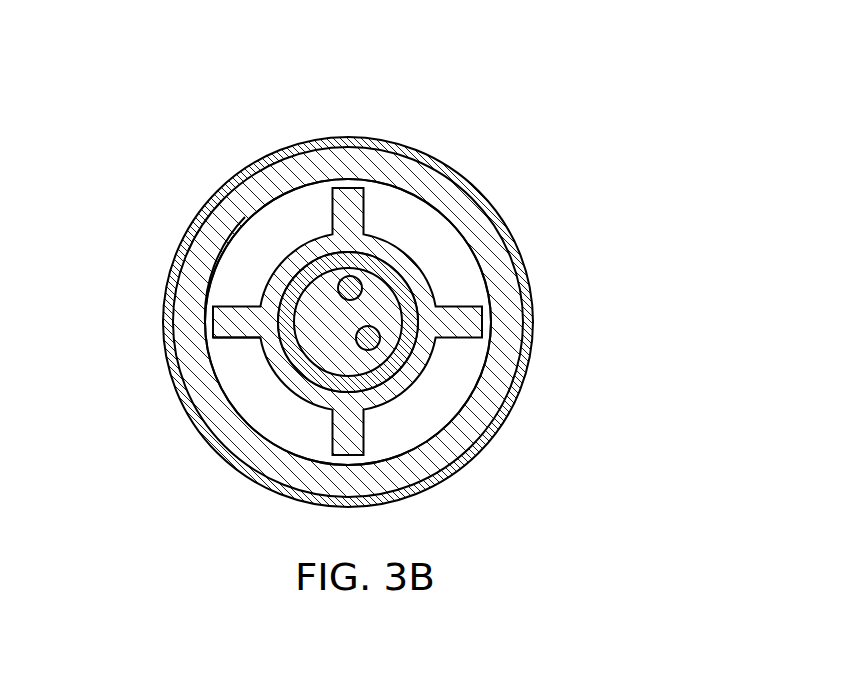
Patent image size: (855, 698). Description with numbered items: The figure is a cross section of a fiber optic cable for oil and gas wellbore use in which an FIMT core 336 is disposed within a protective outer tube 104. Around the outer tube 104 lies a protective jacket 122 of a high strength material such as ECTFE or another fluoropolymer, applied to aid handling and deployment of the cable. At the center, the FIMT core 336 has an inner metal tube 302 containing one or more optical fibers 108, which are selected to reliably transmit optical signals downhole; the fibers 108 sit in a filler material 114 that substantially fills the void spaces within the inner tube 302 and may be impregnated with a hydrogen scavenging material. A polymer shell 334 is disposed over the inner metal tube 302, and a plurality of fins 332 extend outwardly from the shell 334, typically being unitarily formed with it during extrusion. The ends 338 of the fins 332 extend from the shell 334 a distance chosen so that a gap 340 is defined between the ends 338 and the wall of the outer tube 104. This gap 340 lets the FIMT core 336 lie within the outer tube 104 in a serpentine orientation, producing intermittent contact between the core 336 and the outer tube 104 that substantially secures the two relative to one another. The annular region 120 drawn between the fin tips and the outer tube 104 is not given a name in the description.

The outer tube 104 is at (470, 195).
The protective jacket 122 is at (447, 168).
The annular cavity 120 is at (460, 368).
The FIMT core 336 is at (271, 248).
The ends of the fins 338 is at (204, 318).
The polymer shell 334 is at (380, 397).
The gap 340 is at (356, 178).
The fins 332 is at (227, 338).
The inner metal tube 302 is at (313, 372).
The filler material 114 is at (378, 298).
The optical fibers 108 is at (376, 347).